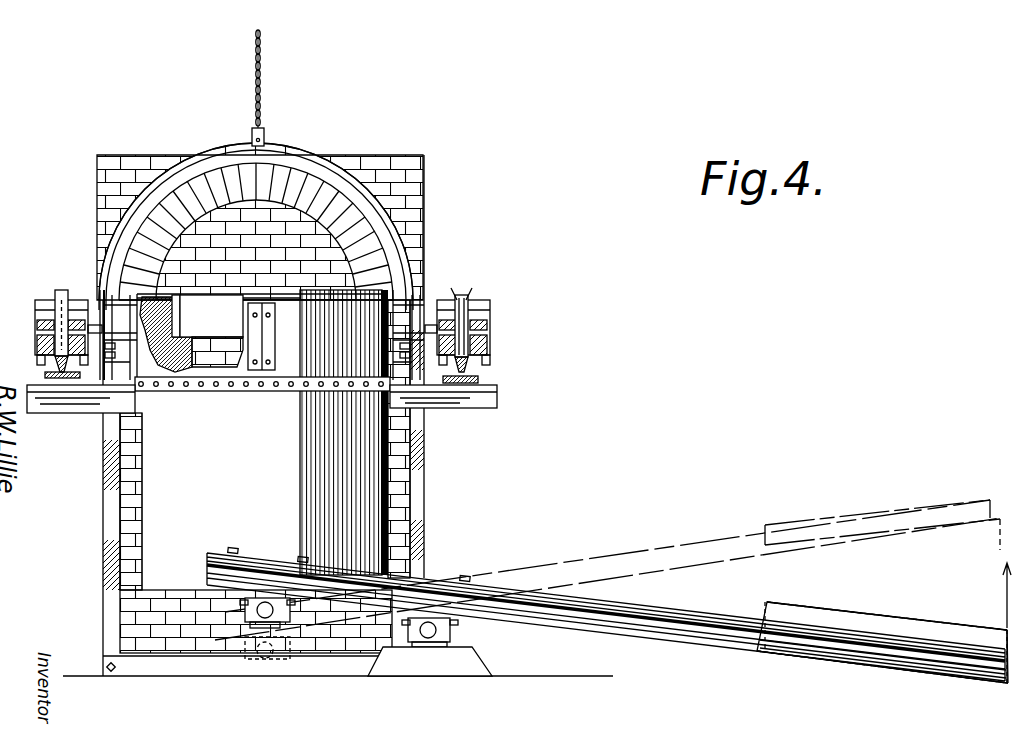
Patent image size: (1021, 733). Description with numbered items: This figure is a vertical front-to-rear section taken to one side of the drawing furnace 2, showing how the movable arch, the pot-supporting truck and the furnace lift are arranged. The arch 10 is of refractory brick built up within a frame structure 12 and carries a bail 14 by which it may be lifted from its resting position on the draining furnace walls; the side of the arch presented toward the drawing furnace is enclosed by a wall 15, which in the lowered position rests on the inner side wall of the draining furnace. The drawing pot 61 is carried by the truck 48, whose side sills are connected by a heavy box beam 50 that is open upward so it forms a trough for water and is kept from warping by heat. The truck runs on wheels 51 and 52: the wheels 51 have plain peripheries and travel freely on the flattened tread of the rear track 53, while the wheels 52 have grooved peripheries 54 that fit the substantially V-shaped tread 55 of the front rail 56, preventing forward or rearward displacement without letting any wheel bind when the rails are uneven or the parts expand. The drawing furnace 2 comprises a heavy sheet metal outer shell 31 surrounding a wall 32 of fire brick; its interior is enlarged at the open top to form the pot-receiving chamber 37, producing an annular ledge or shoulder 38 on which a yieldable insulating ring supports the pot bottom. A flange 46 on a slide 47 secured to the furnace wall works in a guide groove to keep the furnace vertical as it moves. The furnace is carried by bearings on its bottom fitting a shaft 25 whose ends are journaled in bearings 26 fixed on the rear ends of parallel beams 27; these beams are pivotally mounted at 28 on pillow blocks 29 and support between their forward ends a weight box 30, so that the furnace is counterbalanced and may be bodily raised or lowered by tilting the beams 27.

The drawing furnace 2 is at (355, 480).
The arch 10 is at (322, 182).
The frame structure 12 is at (380, 198).
The bail 14 is at (281, 88).
The wall 15 is at (357, 247).
The shaft 25 is at (268, 604).
The bearings 26 is at (252, 600).
The parallel beams 27 is at (405, 585).
The pivot 28 is at (450, 627).
The pillow blocks 29 is at (470, 668).
The weight box 30 is at (835, 614).
The outer shell 31 is at (182, 501).
The wall 32 is at (163, 325).
The pot-receiving chamber 37 is at (178, 298).
The annular ledge or shoulder 38 is at (210, 343).
The flange 46 is at (263, 340).
The slide 47 is at (270, 320).
The truck 48 is at (490, 345).
The box beam 50 is at (38, 350).
The wheels 51 is at (62, 292).
The wheels 52 is at (470, 300).
The track 53 is at (62, 372).
The grooved peripheries 54 is at (463, 300).
The V-shaped tread 55 is at (470, 381).
The rail 56 is at (490, 350).
The drawing pot 61 is at (227, 305).